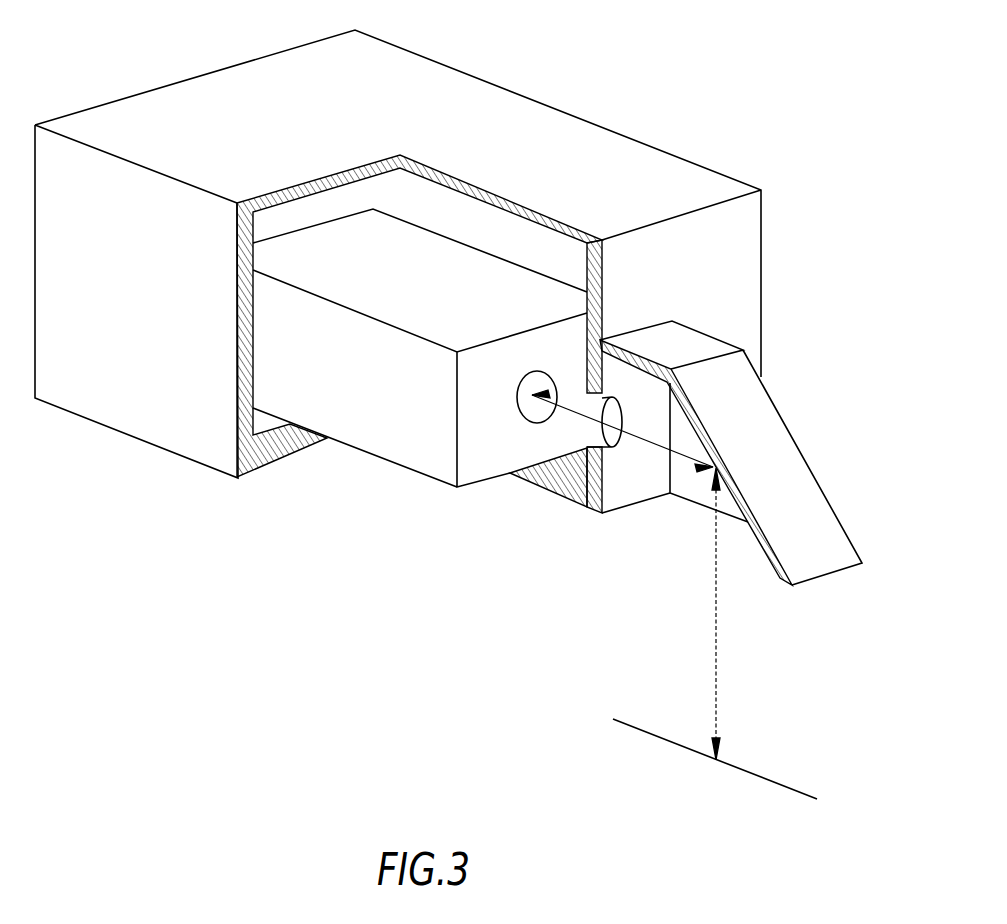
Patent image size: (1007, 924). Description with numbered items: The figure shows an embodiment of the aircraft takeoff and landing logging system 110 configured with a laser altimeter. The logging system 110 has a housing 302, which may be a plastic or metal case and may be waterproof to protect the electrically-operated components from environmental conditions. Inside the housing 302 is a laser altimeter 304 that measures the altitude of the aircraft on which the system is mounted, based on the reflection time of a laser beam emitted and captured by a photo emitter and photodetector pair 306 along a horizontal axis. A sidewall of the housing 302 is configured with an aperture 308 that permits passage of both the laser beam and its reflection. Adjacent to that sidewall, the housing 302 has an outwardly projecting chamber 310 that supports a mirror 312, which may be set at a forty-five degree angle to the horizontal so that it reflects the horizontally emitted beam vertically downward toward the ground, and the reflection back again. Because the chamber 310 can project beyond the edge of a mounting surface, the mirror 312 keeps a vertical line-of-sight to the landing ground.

The aircraft takeoff and landing logging system 110 is at (392, 109).
The housing 302 is at (283, 50).
The laser altimeter 304 is at (483, 247).
The photo emitter and photodetector pair 306 is at (517, 415).
The aperture 308 is at (590, 437).
The outwardly projecting chamber 310 is at (802, 455).
The mirror 312 is at (748, 533).